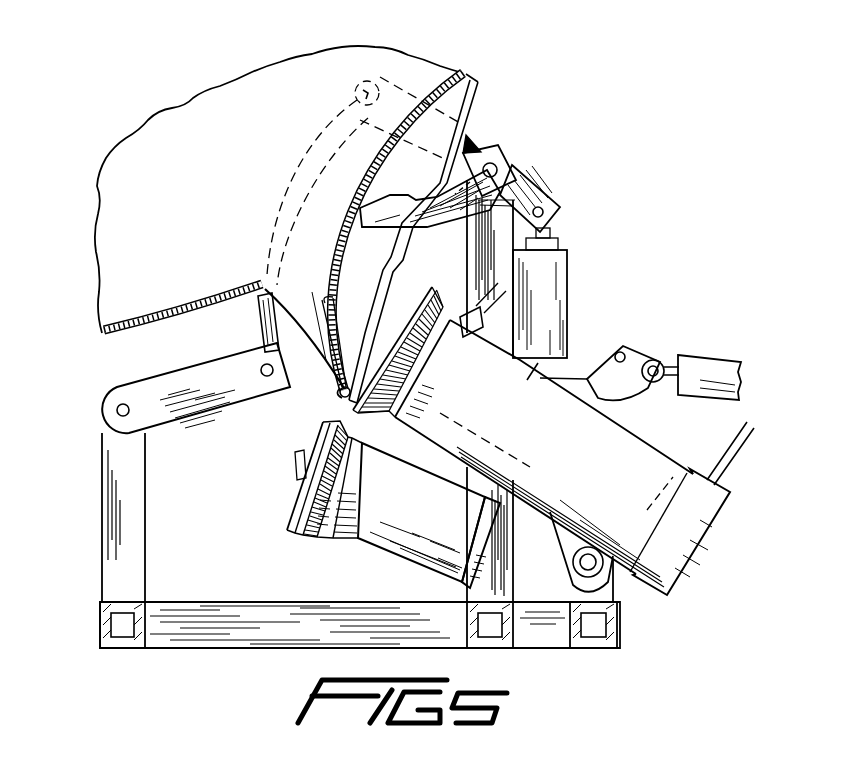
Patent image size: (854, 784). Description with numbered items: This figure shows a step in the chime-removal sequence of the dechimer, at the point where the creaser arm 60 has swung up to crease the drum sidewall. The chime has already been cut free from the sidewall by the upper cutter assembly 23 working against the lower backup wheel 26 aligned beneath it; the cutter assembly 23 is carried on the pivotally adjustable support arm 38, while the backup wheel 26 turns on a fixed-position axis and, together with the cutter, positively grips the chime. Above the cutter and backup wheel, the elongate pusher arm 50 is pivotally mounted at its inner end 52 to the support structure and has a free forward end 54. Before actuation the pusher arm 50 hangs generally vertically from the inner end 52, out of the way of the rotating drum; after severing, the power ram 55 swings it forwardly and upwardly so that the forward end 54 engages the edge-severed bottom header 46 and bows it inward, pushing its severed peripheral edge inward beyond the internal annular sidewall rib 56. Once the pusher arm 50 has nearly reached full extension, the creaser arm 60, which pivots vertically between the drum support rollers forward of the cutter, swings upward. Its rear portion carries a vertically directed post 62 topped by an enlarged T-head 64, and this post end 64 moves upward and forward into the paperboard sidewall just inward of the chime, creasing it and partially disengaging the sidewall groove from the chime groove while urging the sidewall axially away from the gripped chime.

The upper cutter assembly 23 is at (420, 354).
The lower backup wheel 26 is at (290, 514).
The support arm 38 is at (567, 348).
The bottom header 46 is at (368, 153).
The pusher arm 50 is at (424, 198).
The inner end 52 is at (463, 152).
The free forward end 54 is at (372, 228).
The power ram 55 is at (560, 262).
The internal annular sidewall rib 56 is at (312, 300).
The creaser arm 60 is at (254, 317).
The post 62 is at (285, 345).
The T-head 64 is at (236, 290).